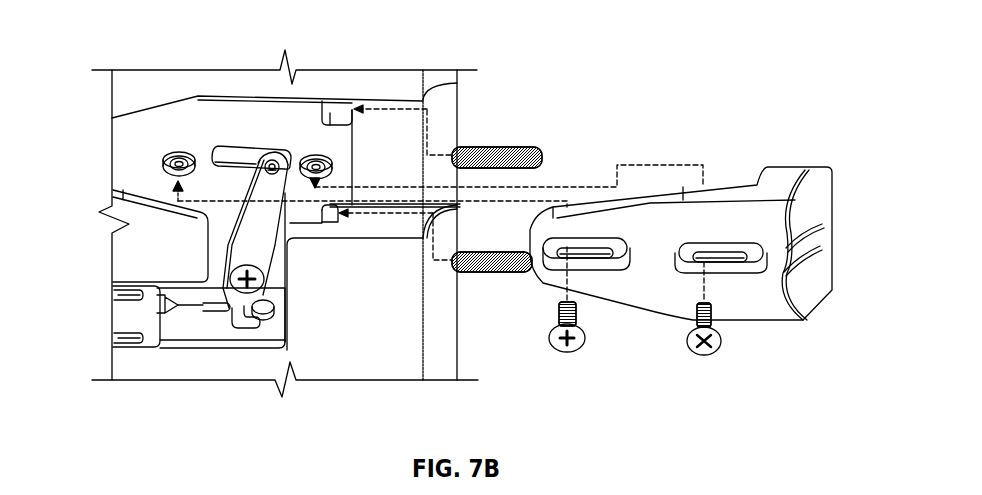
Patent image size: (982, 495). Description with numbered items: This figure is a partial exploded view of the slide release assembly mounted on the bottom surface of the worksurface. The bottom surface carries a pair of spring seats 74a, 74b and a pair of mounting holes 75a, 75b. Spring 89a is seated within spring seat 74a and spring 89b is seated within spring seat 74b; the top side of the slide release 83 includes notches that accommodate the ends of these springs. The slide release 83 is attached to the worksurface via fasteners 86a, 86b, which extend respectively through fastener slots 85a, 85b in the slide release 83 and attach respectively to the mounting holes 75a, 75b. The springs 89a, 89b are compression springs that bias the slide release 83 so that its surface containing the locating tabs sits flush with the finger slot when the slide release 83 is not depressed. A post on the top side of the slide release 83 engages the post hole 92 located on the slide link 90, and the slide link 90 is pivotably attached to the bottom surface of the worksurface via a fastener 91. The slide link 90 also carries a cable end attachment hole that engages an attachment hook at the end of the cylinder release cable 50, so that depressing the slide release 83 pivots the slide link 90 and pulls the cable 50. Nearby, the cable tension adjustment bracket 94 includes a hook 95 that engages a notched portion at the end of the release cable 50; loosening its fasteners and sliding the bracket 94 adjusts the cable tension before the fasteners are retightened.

The cylinder release cable 50 is at (188, 313).
The spring seat 74a is at (337, 118).
The spring seat 74b is at (333, 218).
The mounting hole 75a is at (178, 155).
The mounting hole 75b is at (315, 155).
The slide release 83 is at (820, 190).
The fastener slot 85a is at (610, 258).
The fastener slot 85b is at (745, 262).
The fastener 86a is at (566, 353).
The fastener 86b is at (702, 356).
The spring 89a is at (498, 148).
The spring 89b is at (502, 273).
The slide link 90 is at (253, 221).
The fastener 91 is at (228, 268).
The post hole 92 is at (272, 160).
The cable tension adjustment bracket 94 is at (122, 310).
The hook 95 is at (168, 313).